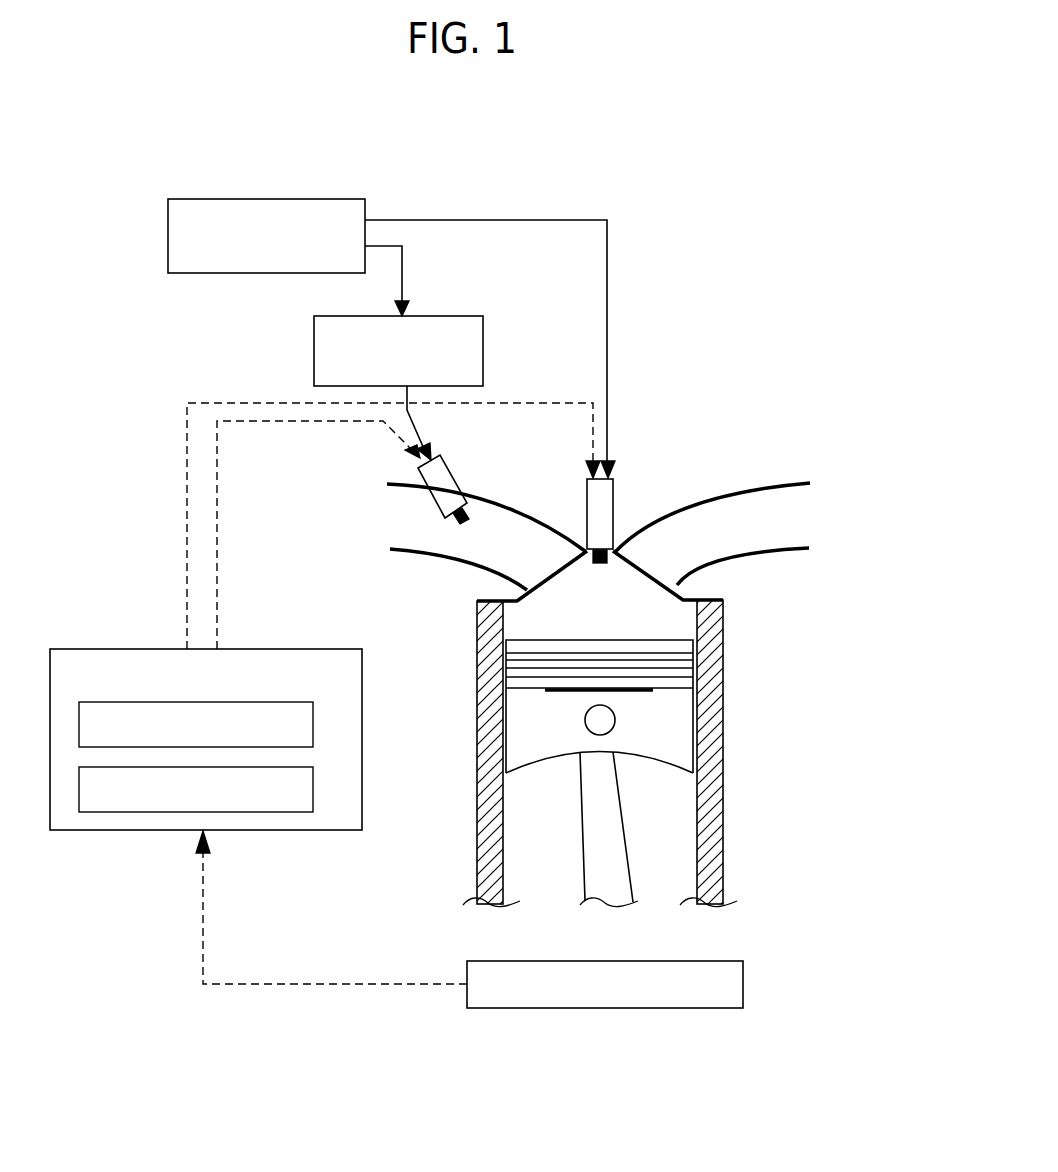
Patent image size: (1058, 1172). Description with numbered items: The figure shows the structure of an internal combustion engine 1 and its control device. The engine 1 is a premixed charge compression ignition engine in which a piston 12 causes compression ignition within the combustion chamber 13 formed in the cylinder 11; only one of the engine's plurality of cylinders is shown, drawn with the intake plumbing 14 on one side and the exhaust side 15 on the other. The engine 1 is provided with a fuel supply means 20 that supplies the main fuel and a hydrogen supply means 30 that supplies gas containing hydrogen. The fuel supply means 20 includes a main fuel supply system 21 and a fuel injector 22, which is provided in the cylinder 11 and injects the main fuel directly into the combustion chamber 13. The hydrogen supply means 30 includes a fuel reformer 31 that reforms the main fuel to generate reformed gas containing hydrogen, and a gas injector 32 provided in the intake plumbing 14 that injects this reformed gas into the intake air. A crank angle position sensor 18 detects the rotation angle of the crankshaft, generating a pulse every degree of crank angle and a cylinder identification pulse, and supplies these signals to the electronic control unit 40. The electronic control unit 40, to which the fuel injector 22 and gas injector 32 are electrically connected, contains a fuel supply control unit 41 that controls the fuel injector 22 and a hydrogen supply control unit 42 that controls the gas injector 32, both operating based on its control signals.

The internal combustion engine 1 is at (766, 459).
The cylinder 11 is at (722, 780).
The piston 12 is at (637, 717).
The combustion chamber 13 is at (637, 608).
The intake plumbing 14 is at (400, 552).
The exhaust port 15 is at (797, 552).
The crank angle position sensor 18 is at (743, 985).
The fuel supply means 20 is at (421, 181).
The main fuel supply system 21 is at (168, 237).
The fuel injector 22 is at (613, 505).
The hydrogen supply means 30 is at (479, 297).
The fuel reformer 31 is at (314, 355).
The gas injector 32 is at (453, 477).
The electronic control unit 40 is at (99, 648).
The fuel supply control unit 41 is at (313, 727).
The hydrogen supply control unit 42 is at (313, 790).